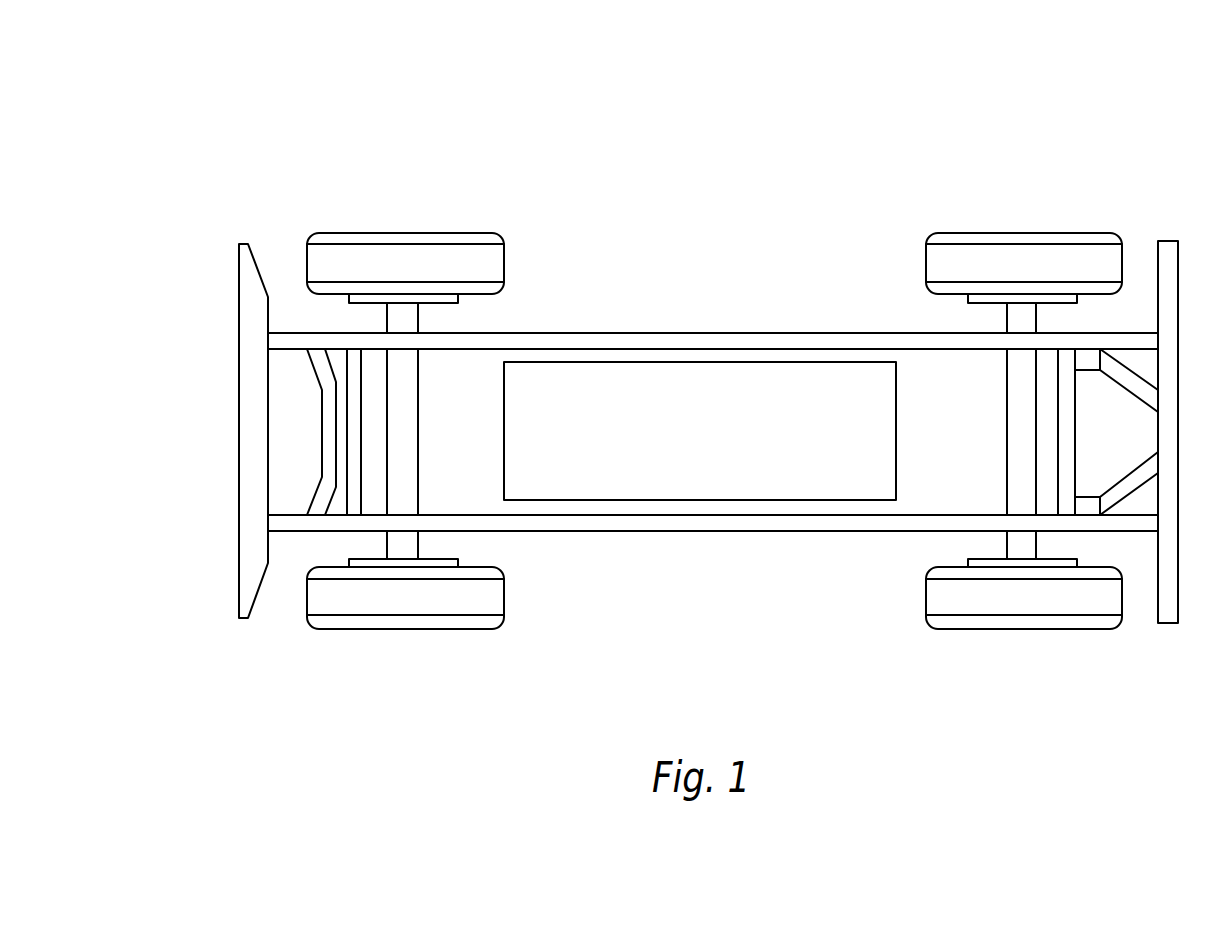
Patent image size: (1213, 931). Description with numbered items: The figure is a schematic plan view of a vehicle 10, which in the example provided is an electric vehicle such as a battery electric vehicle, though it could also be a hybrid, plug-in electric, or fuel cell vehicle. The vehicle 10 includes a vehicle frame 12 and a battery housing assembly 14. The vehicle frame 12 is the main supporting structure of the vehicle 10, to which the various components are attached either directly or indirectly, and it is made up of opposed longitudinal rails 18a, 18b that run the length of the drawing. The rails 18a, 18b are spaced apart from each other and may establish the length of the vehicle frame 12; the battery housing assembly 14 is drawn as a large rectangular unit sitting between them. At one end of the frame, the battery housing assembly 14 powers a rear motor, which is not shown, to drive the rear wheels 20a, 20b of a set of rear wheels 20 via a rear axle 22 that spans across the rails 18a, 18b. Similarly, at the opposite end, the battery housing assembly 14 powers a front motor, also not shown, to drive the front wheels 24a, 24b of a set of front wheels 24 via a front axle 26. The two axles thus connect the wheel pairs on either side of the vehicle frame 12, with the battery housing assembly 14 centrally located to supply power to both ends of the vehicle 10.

The vehicle 10 is at (222, 139).
The vehicle frame 12 is at (602, 541).
The battery housing assembly 14 is at (797, 392).
The longitudinal rail 18a is at (667, 342).
The longitudinal rail 18b is at (797, 528).
The set of rear wheels 20 is at (972, 213).
The rear wheel 20a is at (1037, 605).
The rear wheel 20b is at (1047, 253).
The rear axle 22 is at (1008, 472).
The set of front wheels 24 is at (405, 224).
The front wheel 24a is at (395, 598).
The front wheel 24b is at (443, 252).
The front axle 26 is at (406, 386).